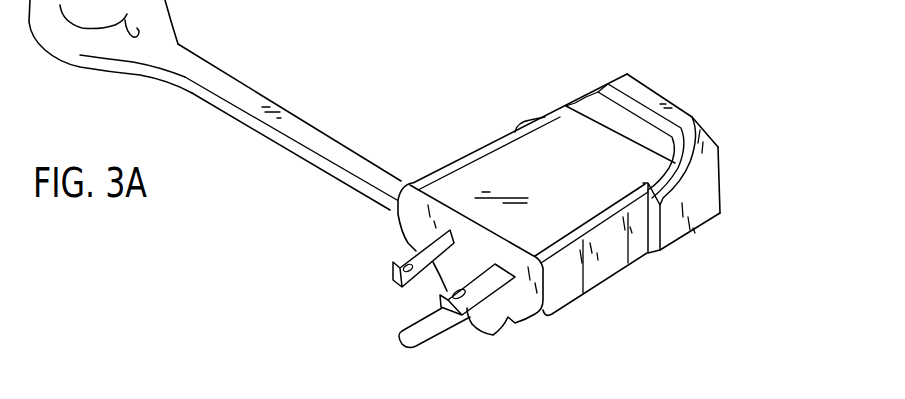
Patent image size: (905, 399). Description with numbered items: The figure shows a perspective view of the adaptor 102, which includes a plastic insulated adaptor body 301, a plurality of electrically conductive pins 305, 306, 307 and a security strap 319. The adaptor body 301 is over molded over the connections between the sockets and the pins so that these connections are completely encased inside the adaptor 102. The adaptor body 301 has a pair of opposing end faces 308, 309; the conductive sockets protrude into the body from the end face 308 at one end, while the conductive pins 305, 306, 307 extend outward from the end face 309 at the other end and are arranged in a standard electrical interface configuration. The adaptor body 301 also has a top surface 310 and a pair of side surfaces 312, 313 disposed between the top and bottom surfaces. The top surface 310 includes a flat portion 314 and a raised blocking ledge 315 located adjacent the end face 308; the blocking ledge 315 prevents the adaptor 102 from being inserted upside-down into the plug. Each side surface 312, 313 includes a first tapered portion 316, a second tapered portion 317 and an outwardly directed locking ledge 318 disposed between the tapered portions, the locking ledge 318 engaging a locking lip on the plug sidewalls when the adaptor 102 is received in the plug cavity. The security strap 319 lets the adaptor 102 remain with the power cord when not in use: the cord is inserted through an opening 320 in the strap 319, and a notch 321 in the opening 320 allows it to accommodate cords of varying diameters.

The adaptor 102 is at (413, 63).
The adaptor body 301 is at (492, 147).
The conductive pin 305 is at (397, 260).
The conductive pin 306 is at (498, 303).
The conductive pin 307 is at (432, 340).
The end face 308 is at (708, 130).
The end face 309 is at (413, 218).
The top surface 310 is at (550, 137).
The side surface 312 is at (438, 168).
The side surface 313 is at (612, 255).
The flat portion 314 is at (590, 181).
The raised blocking ledge 315 is at (647, 93).
The first tapered portion 316 is at (560, 296).
The second tapered portion 317 is at (711, 211).
The locking ledge 318 is at (652, 251).
The security strap 319 is at (308, 137).
The opening 320 is at (95, 24).
The notch 321 is at (139, 30).